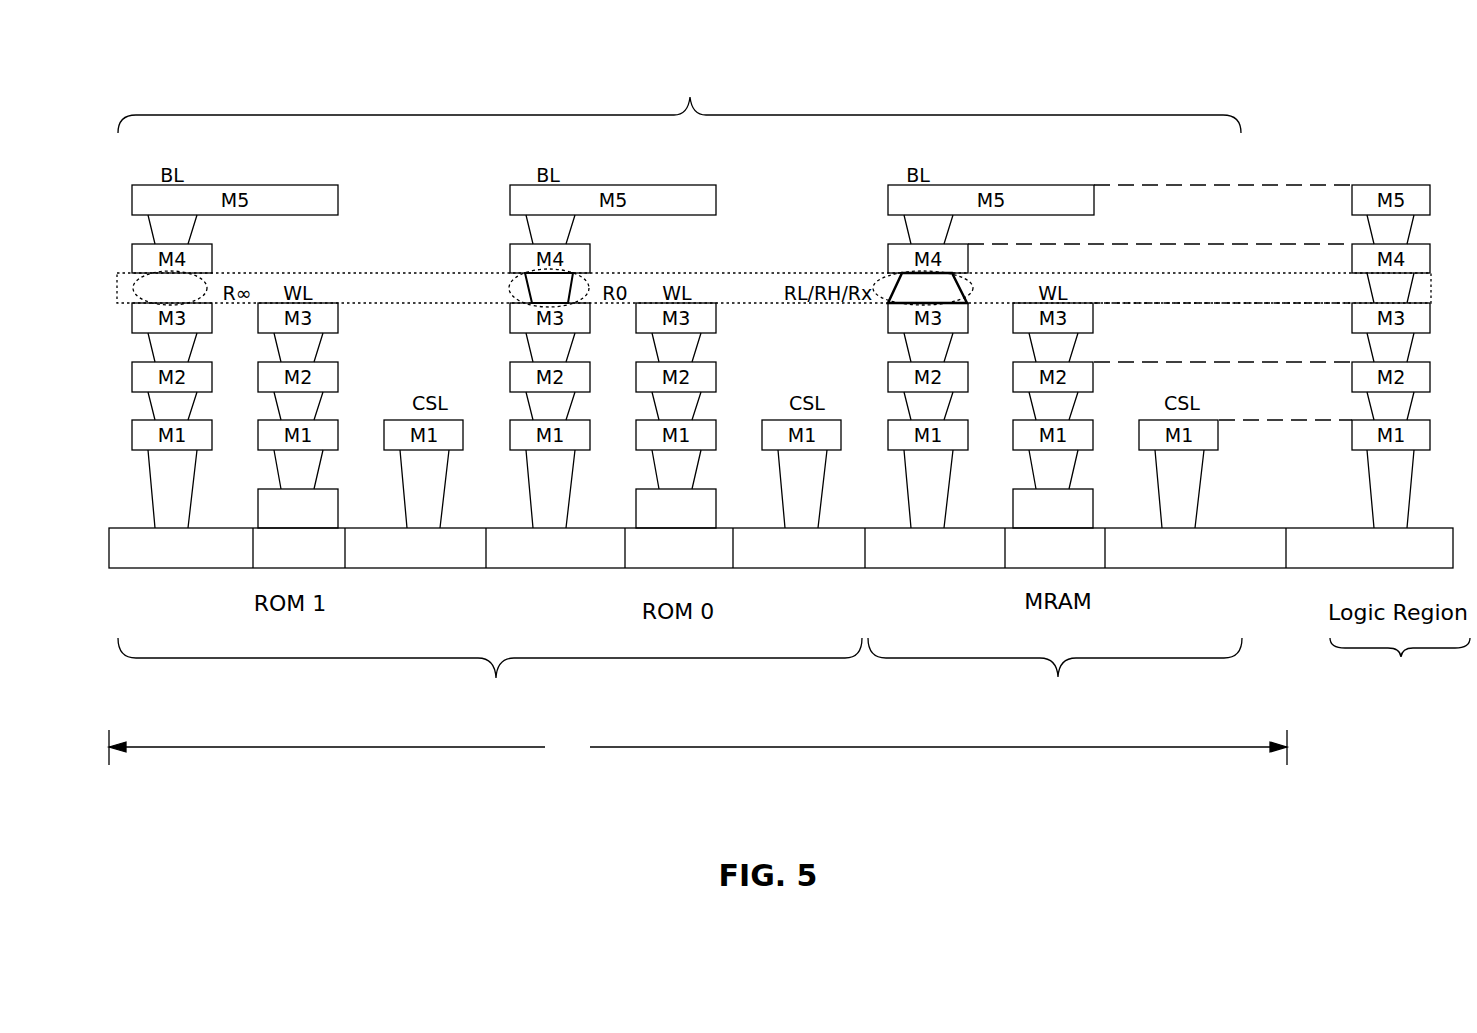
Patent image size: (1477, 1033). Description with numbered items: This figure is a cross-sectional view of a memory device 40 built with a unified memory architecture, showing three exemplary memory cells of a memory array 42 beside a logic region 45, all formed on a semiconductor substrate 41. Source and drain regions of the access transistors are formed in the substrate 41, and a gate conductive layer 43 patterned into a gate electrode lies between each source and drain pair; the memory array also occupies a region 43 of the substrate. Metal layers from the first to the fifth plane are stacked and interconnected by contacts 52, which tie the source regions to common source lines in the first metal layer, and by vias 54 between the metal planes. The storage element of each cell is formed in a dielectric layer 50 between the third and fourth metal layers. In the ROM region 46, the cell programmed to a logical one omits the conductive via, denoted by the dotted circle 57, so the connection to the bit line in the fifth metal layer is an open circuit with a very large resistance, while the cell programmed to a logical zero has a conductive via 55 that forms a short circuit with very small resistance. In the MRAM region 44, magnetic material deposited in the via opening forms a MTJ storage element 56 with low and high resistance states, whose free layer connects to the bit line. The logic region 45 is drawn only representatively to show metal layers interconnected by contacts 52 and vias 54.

The memory device 40 is at (1331, 67).
The semiconductor substrate 41 is at (126, 568).
The memory array 42 is at (679, 99).
The gate conductive layer 43 is at (1121, 509).
The MRAM region 44 is at (1055, 673).
The logic region 45 is at (1400, 664).
The ROM region 46 is at (490, 672).
The dielectric layer 50 is at (413, 273).
The contacts 52 is at (194, 483).
The vias 54 is at (318, 348).
The conductive via 55 is at (512, 290).
The MTJ storage element 56 is at (878, 302).
The omitted conductive via 57 is at (206, 292).